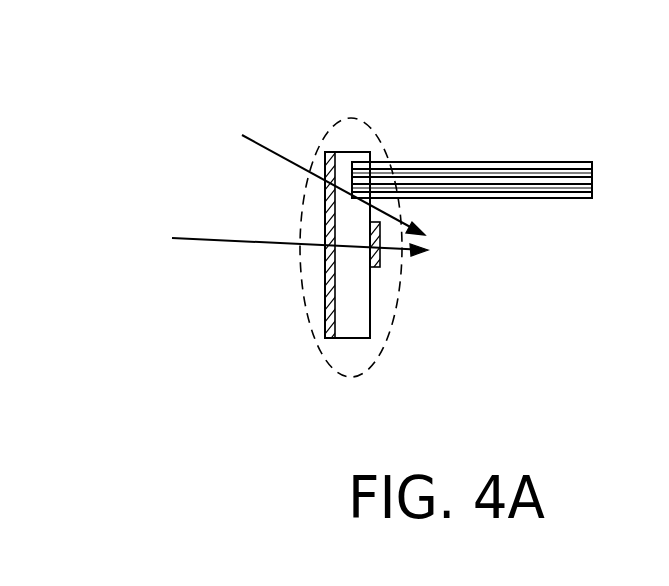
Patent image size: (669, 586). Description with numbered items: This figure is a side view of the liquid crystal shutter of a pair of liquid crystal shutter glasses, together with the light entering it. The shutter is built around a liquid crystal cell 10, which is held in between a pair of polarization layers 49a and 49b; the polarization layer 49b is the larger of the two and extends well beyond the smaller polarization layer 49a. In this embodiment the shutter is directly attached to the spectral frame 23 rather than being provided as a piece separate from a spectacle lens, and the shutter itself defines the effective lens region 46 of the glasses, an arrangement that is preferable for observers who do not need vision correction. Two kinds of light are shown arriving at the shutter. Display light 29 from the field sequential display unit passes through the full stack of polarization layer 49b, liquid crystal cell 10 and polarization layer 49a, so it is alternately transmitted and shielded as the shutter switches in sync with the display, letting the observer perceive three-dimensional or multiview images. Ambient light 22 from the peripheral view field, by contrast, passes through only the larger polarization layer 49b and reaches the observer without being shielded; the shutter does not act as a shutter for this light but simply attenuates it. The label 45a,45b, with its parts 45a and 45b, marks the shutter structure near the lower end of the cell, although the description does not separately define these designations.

The liquid crystal cell 10 is at (362, 298).
The ambient light 22 is at (270, 149).
The spectral frame 23 is at (552, 198).
The display light 29 is at (210, 241).
The end faces 45a,45b is at (411, 397).
The end face 45a is at (411, 397).
The end face 45b is at (357, 339).
The effective lens region 46 is at (372, 118).
The polarization layer 49a is at (380, 261).
The polarization layer 49b is at (325, 313).